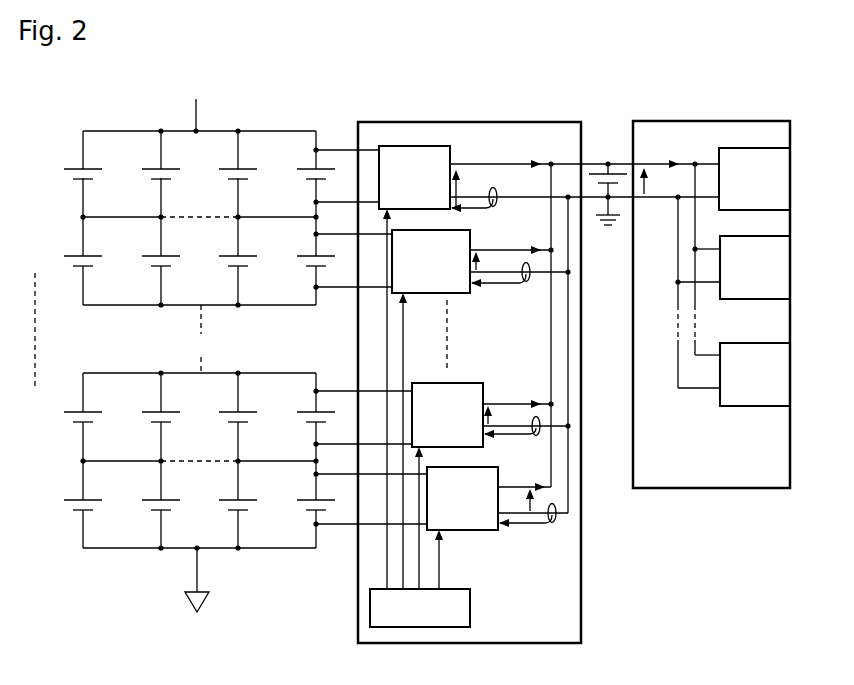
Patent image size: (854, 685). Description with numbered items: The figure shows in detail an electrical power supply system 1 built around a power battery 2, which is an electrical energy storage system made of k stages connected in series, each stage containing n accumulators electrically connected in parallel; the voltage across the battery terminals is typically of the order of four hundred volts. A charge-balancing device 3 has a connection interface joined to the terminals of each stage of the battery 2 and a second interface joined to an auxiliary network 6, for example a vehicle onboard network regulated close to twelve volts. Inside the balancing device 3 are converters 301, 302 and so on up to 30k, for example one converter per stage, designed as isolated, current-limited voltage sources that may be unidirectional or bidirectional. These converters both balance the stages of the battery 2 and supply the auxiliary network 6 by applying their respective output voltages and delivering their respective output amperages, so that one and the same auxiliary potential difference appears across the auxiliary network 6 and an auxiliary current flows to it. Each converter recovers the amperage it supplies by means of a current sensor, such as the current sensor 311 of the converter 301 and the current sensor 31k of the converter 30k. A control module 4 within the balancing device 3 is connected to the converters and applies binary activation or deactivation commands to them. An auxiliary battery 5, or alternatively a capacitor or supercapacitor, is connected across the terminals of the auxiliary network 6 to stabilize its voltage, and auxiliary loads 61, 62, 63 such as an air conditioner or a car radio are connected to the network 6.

The electrical power supply system 1 is at (250, 82).
The power battery 2 is at (150, 112).
The charge-balancing device 3 is at (470, 121).
The control module 4 is at (470, 607).
The auxiliary battery 5 is at (608, 162).
The auxiliary network 6 is at (713, 121).
The converter 30k is at (433, 187).
The converter 302 is at (467, 430).
The converter 301 is at (482, 514).
The current sensor 31k is at (494, 187).
The current sensor 311 is at (553, 523).
The auxiliary load 61 is at (767, 193).
The auxiliary load 62 is at (768, 281).
The auxiliary load 63 is at (768, 388).